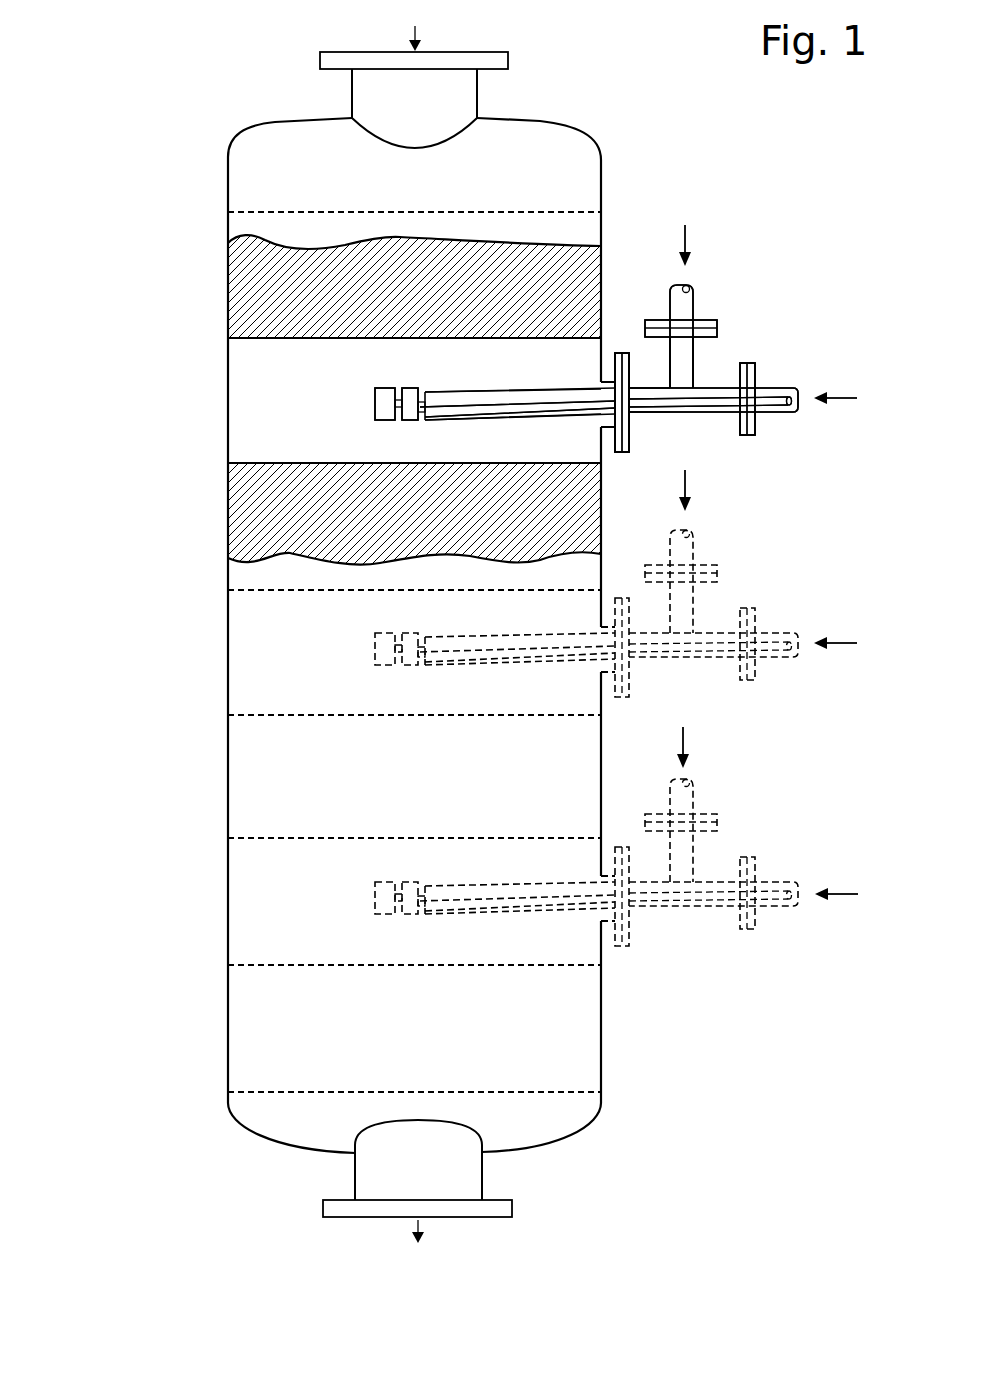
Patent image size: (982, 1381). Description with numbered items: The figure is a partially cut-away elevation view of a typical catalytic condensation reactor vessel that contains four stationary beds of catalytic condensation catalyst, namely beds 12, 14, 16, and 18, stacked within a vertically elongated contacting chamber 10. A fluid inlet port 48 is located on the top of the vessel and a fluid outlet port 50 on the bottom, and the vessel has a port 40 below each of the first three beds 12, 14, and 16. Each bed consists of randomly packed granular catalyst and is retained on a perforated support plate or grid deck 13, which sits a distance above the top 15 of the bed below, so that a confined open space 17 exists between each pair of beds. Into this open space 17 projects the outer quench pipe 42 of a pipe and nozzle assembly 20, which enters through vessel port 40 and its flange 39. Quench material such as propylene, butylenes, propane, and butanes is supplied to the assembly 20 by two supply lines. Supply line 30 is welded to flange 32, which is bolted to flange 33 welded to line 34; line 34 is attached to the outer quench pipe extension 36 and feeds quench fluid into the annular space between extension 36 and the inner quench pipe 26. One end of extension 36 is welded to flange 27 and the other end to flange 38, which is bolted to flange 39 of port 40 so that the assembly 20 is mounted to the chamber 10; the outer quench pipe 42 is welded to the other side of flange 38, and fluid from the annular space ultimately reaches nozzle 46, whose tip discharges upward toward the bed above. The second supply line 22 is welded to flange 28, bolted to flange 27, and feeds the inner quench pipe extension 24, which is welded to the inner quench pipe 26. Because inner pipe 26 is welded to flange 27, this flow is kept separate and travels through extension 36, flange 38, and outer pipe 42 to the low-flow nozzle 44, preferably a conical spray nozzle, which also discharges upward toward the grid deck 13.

The contacting chamber 10 is at (195, 167).
The catalyst bed 12 is at (290, 278).
The grid deck 13 is at (270, 339).
The catalyst bed 14 is at (288, 513).
The top of catalyst bed 15 is at (287, 462).
The catalyst bed 16 is at (305, 763).
The open space 17 is at (319, 421).
The catalyst bed 18 is at (290, 1015).
The pipe and nozzle assembly 20 is at (750, 240).
The quench material supply line 22 is at (775, 387).
The inner quench pipe extension 24 is at (765, 405).
The inner quench pipe 26 is at (570, 417).
The flange 27 is at (745, 436).
The flange 28 is at (753, 362).
The quench material supply line 30 is at (670, 285).
The flange 32 is at (700, 316).
The flange 33 is at (695, 368).
The line 34 is at (697, 360).
The outer quench pipe extension 36 is at (687, 417).
The flange 38 is at (623, 453).
The flange 39 is at (615, 453).
The vessel port 40 is at (605, 370).
The outer quench pipe 42 is at (485, 391).
The nozzle 44 is at (415, 388).
The nozzle 46 is at (383, 388).
The fluid inlet port 48 is at (503, 70).
The fluid outlet port 50 is at (508, 1196).